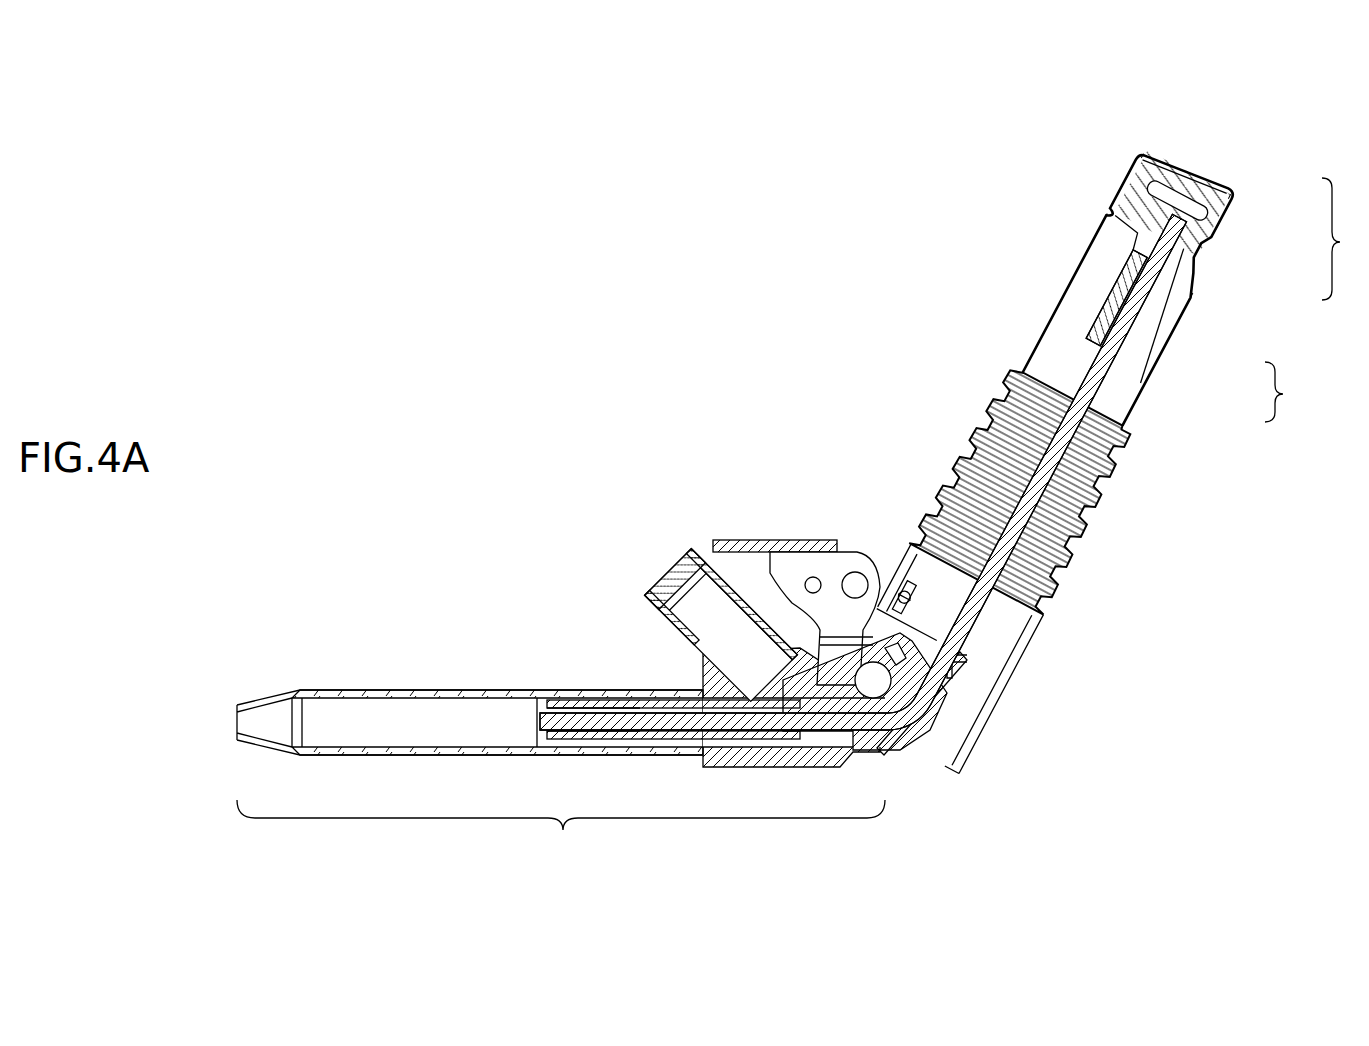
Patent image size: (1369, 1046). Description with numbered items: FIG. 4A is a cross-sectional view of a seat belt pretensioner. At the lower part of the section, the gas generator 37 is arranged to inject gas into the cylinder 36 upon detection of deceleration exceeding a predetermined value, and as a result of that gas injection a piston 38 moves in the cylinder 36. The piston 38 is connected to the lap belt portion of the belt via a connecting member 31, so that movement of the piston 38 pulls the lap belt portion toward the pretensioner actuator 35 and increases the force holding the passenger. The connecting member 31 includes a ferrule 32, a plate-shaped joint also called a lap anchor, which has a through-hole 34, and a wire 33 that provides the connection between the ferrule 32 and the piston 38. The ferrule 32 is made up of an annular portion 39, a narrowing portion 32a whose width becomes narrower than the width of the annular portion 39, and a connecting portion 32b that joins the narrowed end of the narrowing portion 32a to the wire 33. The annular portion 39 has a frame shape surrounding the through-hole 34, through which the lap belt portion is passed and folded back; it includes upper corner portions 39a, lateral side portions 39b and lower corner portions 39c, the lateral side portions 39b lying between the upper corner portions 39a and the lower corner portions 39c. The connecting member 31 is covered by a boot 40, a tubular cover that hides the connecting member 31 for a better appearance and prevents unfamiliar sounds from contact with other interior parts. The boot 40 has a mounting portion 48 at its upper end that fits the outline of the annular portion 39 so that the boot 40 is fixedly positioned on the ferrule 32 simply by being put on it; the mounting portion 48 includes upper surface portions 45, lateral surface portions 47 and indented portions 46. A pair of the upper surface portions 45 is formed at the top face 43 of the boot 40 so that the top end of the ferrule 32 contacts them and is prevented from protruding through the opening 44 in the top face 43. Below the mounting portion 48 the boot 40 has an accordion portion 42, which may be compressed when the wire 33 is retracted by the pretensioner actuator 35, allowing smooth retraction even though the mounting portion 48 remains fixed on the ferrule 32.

The connecting member 31 is at (1290, 392).
The ferrule 32 is at (1158, 250).
The narrowing portion 32a is at (1135, 228).
The connecting portion 32b is at (1107, 302).
The wire 33 is at (1140, 385).
The through-hole 34 is at (1185, 195).
The pretensioner actuator 35 is at (561, 833).
The cylinder 36 is at (503, 690).
The gas generator 37 is at (693, 605).
The piston 38 is at (645, 757).
The annular portion 39 is at (1120, 181).
The upper corner portions 39a is at (1240, 197).
The lateral side portions 39b is at (1213, 200).
The lower corner portions 39c is at (1200, 257).
The boot 40 is at (1040, 342).
The accordion portion 42 is at (990, 402).
The top face 43 is at (1213, 192).
The opening 44 is at (1200, 170).
The upper surface portions 45 is at (1240, 207).
The indented portions 46 is at (1203, 260).
The lateral surface portions 47 is at (1227, 240).
The mounting portion 48 is at (1344, 239).